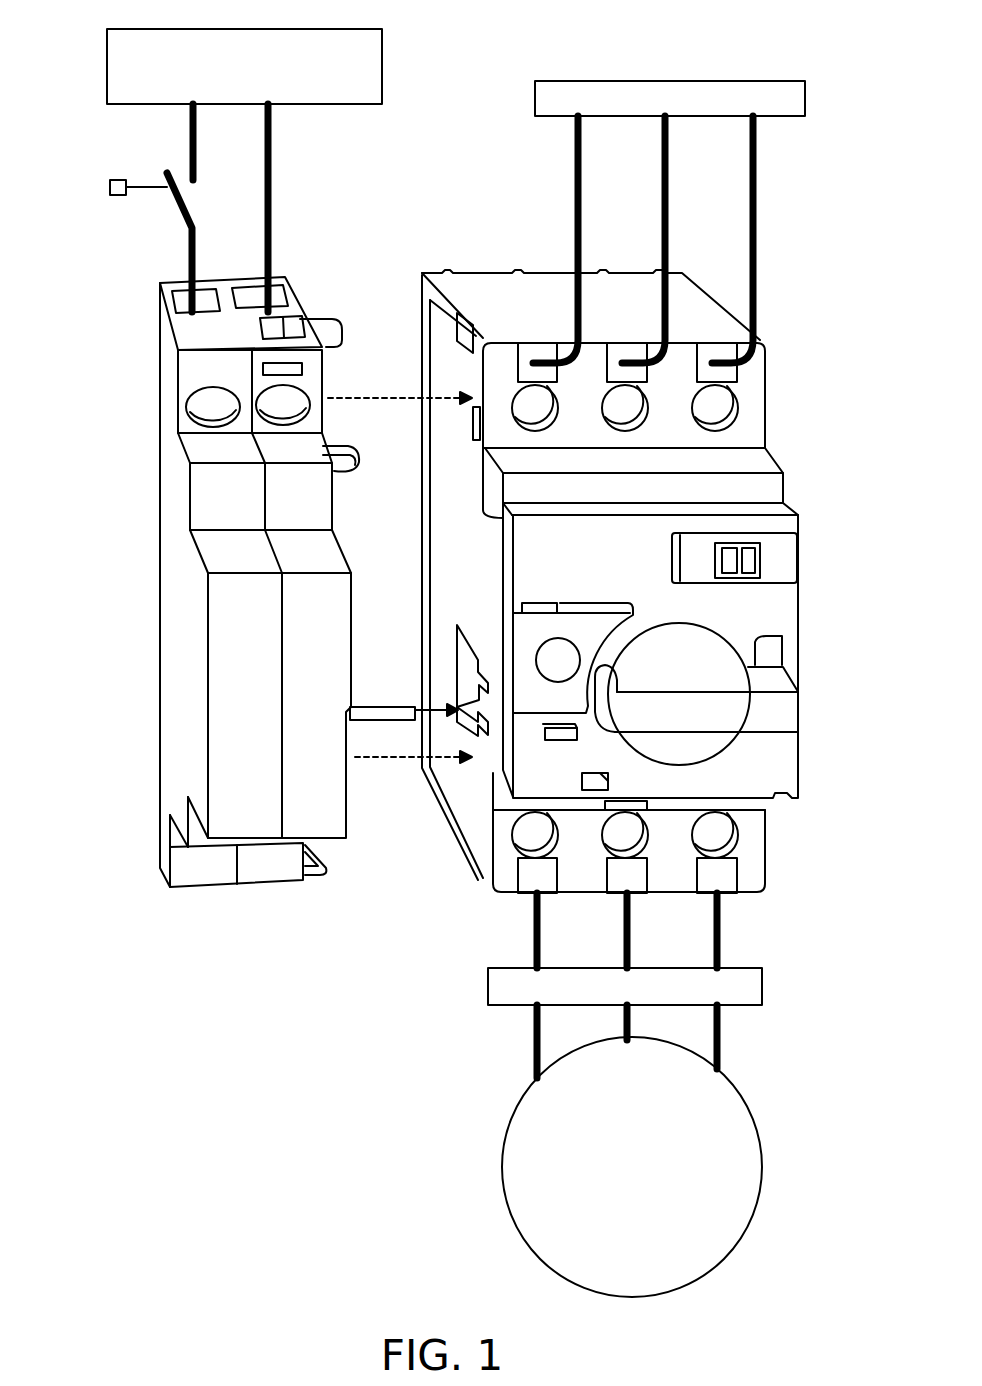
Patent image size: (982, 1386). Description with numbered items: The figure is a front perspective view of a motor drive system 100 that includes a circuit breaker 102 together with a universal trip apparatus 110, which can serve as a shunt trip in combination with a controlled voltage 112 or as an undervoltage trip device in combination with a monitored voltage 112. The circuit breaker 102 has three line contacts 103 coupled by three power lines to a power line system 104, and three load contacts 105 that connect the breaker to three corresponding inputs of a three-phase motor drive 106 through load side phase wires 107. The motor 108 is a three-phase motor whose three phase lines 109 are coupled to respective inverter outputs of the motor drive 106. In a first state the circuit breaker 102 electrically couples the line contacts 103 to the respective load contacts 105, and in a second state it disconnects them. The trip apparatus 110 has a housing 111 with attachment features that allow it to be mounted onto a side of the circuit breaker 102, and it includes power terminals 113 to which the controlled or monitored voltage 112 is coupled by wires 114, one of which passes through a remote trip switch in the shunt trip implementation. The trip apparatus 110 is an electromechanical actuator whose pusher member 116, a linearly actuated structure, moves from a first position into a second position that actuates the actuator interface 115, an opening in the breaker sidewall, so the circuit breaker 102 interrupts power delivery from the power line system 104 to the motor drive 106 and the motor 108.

The motor drive system 100 is at (815, 41).
The circuit breaker 102 is at (477, 290).
The line contacts 103 is at (575, 188).
The power line system 104 is at (535, 106).
The load contacts 105 is at (543, 897).
The motor drive 106 is at (488, 988).
The load side phase wires 107 is at (533, 949).
The motor 108 is at (508, 1118).
The phase lines 109 is at (533, 1031).
The trip apparatus 110 is at (122, 451).
The housing 111 is at (172, 665).
The controlled or monitored voltage 112 is at (107, 66).
The power terminals 113 is at (172, 299).
The wires 114 is at (189, 260).
The actuator interface 115 is at (455, 681).
The pusher member 116 is at (388, 722).